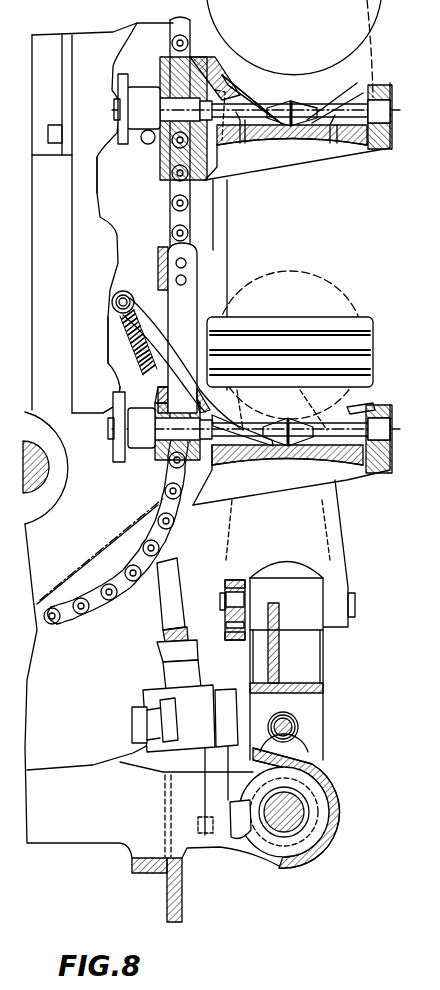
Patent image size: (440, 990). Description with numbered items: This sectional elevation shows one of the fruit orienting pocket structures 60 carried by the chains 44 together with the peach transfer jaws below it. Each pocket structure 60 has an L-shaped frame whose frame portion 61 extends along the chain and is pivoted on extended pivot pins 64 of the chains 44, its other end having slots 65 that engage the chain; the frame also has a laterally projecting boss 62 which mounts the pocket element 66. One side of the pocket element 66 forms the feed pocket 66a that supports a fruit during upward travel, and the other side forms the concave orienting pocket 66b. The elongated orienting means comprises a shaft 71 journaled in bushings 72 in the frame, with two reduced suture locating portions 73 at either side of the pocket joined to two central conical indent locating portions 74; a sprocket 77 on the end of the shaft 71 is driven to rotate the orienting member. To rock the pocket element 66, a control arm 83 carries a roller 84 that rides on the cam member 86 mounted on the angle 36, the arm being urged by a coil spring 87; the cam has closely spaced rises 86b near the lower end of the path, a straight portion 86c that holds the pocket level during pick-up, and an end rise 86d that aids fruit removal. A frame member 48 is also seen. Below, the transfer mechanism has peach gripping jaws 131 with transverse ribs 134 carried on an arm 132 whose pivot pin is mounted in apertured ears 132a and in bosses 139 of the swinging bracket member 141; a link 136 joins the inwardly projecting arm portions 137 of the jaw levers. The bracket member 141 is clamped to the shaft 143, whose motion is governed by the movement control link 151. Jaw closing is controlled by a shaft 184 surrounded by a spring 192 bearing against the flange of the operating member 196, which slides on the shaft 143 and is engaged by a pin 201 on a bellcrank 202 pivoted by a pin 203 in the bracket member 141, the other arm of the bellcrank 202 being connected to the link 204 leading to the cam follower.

The angle 36 is at (235, 276).
The chains 44 is at (178, 187).
The frame member 48 is at (228, 218).
The pocket structure 60 is at (374, 165).
The frame portion 61 is at (198, 312).
The boss 62 is at (370, 480).
The pivot pins 64 is at (186, 263).
The slots 65 is at (186, 280).
The pocket element 66 is at (372, 88).
The feed pocket 66a is at (272, 142).
The orienting pocket 66b is at (243, 110).
The shaft 71 is at (155, 144).
The bushings 72 is at (165, 90).
The suture locating portions 73 is at (240, 143).
The indent locating portions 74 is at (300, 100).
The sprocket 77 is at (124, 75).
The control arm 83 is at (172, 360).
The roller 84 is at (128, 291).
The cam member 86 is at (80, 226).
The cam rises 86b is at (98, 158).
The straight portion 86c is at (113, 330).
The end rise 86d is at (114, 405).
The coil spring 87 is at (125, 350).
The peach gripping jaws 131 is at (373, 316).
The arm 132 is at (348, 535).
The apertured ears 132a is at (355, 593).
The transverse ribs 134 is at (297, 345).
The link 136 is at (224, 592).
The arm portions 137 is at (235, 580).
The bosses 139 is at (312, 645).
The swinging bracket member 141 is at (325, 715).
The shaft 143 is at (288, 826).
The movement control link 151 is at (88, 843).
The shaft 184 is at (298, 733).
The spring 192 is at (300, 748).
The operating member 196 is at (338, 812).
The pin 201 is at (243, 840).
The bellcrank 202 is at (170, 710).
The pin 203 is at (130, 723).
The link 204 is at (164, 618).